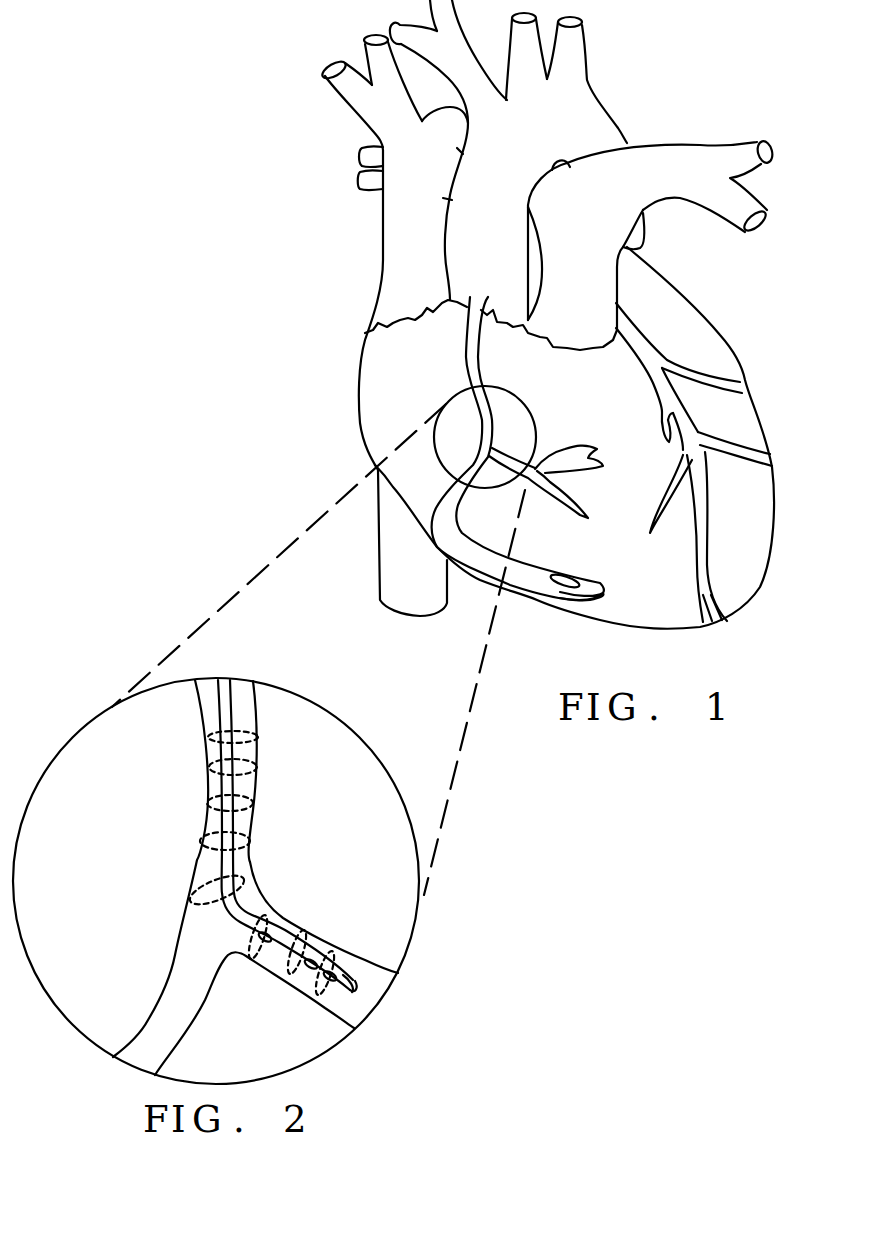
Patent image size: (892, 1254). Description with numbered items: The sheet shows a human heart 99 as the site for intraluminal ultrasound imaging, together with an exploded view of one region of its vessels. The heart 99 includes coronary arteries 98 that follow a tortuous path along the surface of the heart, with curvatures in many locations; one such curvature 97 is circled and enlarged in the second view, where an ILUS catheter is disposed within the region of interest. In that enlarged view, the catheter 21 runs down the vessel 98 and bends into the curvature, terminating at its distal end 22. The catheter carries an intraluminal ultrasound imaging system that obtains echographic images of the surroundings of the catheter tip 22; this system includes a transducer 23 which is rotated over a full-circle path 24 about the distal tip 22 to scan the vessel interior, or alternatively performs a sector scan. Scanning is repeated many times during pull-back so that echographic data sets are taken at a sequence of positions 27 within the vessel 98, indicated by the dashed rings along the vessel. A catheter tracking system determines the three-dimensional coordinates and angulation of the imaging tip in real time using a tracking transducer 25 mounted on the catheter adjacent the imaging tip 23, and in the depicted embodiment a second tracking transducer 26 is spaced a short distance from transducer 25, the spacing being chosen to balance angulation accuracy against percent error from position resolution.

In FIG. 2, the catheter 21 is at (222, 827).
In FIG. 2, the distal end 22 is at (353, 979).
In FIG. 2, the transducer 23 is at (333, 986).
In FIG. 2, the 360-degree path 24 is at (331, 972).
In FIG. 2, the tracking transducer 25 is at (312, 960).
In FIG. 2, the tracking transducer 26 is at (263, 942).
In FIG. 2, the sequence of positions 27 is at (198, 887).
In FIG. 1, the curvature 97 is at (505, 432).
In FIG. 1, the coronary arteries 98 is at (470, 357).
In FIG. 2, the coronary arteries 98 is at (166, 977).
In FIG. 1, the heart 99 is at (742, 362).